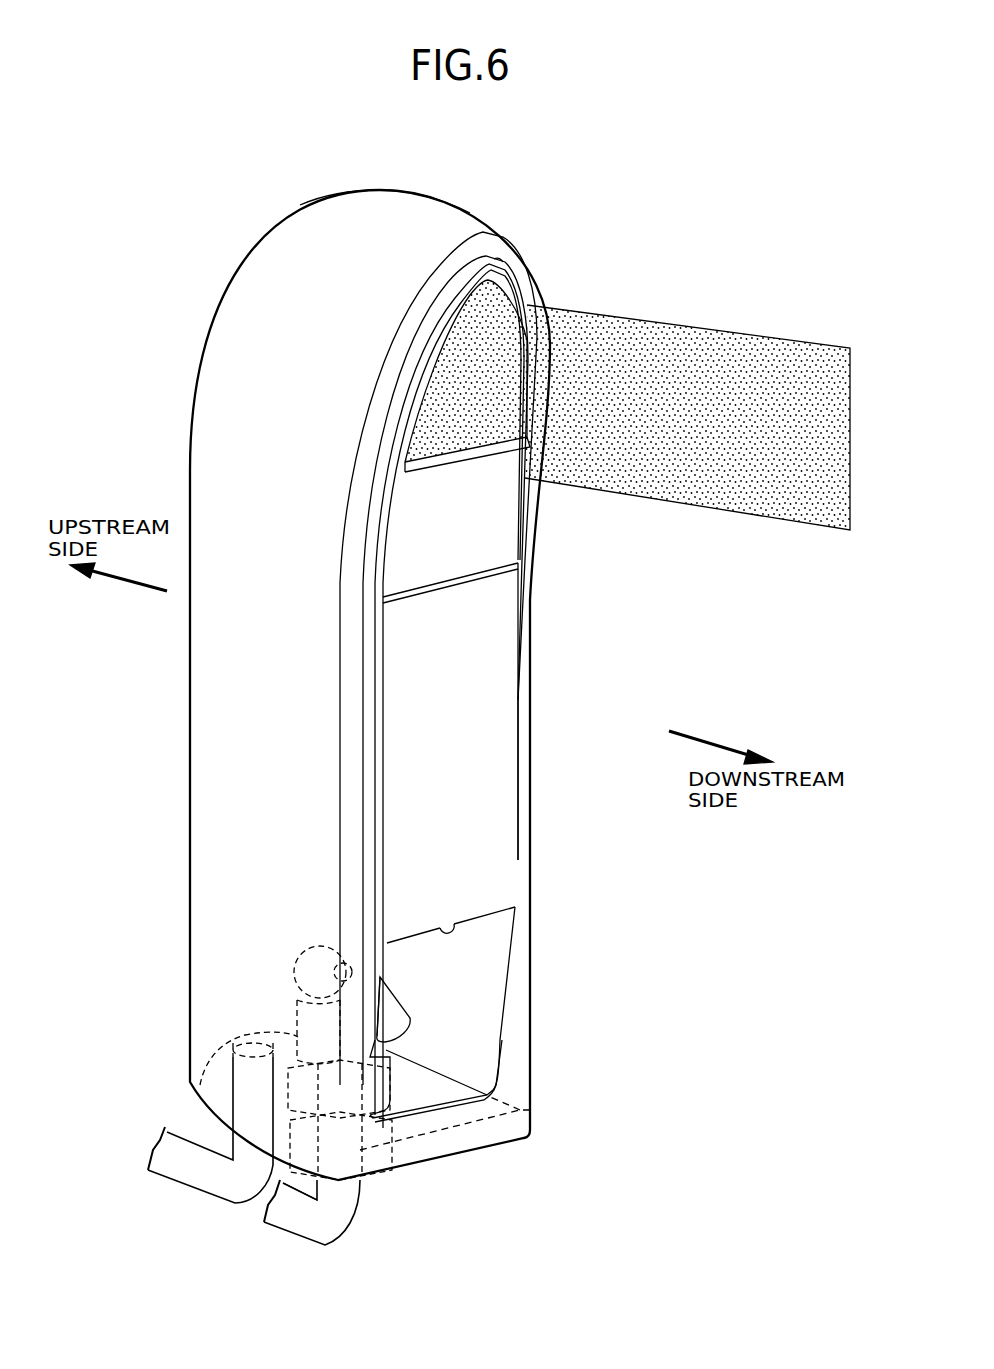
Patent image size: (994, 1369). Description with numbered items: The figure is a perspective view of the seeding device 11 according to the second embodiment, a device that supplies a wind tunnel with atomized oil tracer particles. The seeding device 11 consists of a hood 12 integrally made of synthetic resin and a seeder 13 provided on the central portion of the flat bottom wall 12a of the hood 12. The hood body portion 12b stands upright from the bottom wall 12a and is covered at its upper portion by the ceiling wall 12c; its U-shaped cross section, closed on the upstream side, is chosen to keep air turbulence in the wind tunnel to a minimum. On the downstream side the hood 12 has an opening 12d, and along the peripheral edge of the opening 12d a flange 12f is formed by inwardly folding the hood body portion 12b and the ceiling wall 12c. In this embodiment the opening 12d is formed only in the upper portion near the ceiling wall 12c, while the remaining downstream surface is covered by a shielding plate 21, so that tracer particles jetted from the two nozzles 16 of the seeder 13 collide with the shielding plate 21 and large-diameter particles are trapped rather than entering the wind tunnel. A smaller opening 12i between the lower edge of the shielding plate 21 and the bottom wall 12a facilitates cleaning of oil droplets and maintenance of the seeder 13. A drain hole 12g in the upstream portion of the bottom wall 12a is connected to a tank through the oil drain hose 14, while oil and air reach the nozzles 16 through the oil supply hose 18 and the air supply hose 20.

The seeding device 11 is at (172, 459).
The hood 12 is at (190, 692).
The bottom wall 12a is at (433, 1090).
The hood body portion 12b is at (220, 805).
The ceiling wall 12c is at (386, 212).
The opening 12d is at (512, 352).
The flange 12f is at (418, 362).
The drain hole 12g is at (246, 1040).
The opening 12i is at (450, 926).
The seeder 13 is at (403, 981).
The oil drain hose 14 is at (190, 1173).
The nozzle 16 is at (305, 968).
The oil supply hose 18 is at (334, 1230).
The air supply hose 20 is at (300, 1191).
The shielding plate 21 is at (495, 680).